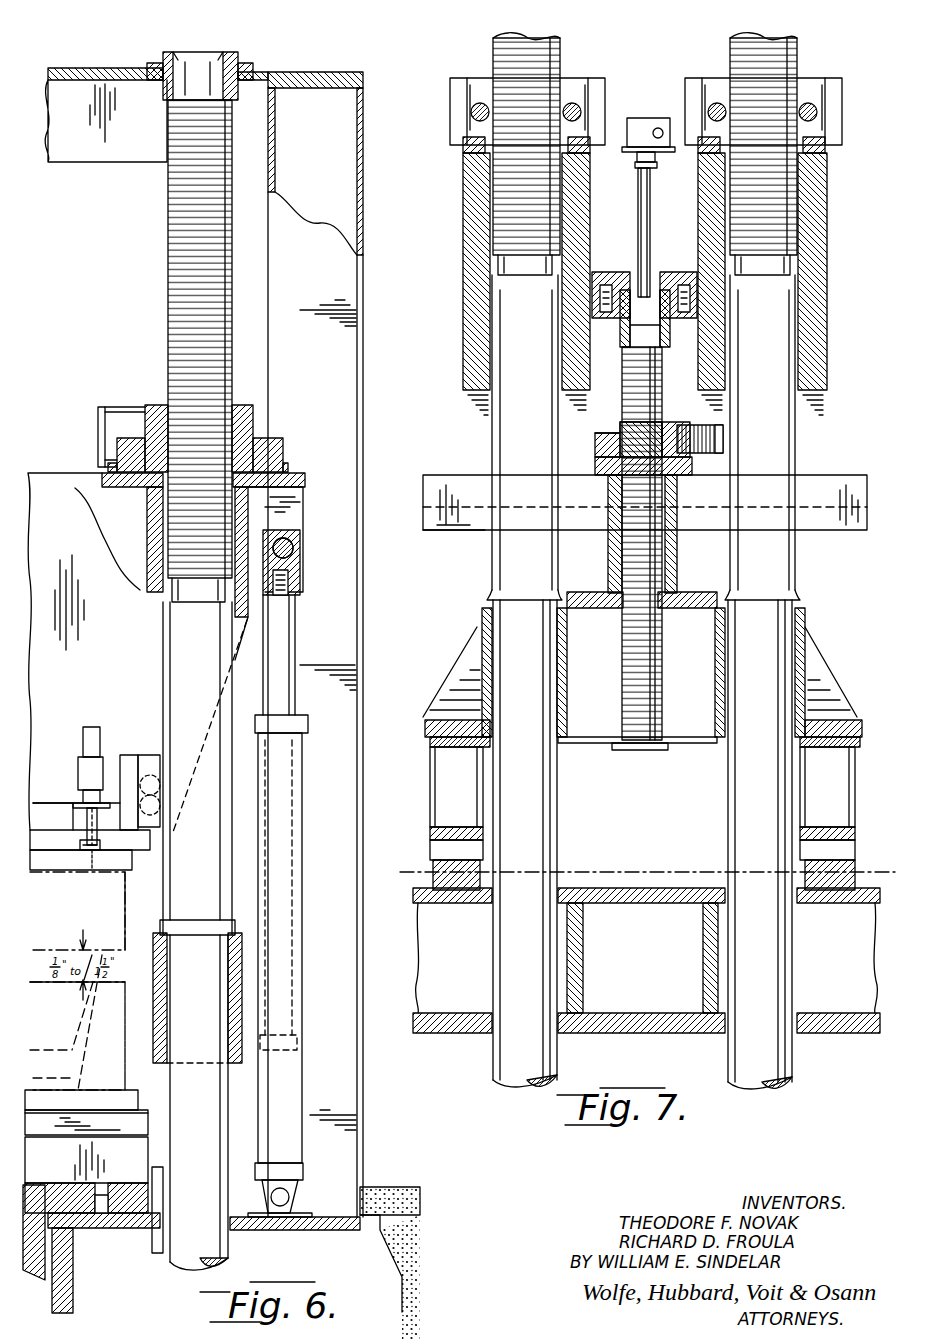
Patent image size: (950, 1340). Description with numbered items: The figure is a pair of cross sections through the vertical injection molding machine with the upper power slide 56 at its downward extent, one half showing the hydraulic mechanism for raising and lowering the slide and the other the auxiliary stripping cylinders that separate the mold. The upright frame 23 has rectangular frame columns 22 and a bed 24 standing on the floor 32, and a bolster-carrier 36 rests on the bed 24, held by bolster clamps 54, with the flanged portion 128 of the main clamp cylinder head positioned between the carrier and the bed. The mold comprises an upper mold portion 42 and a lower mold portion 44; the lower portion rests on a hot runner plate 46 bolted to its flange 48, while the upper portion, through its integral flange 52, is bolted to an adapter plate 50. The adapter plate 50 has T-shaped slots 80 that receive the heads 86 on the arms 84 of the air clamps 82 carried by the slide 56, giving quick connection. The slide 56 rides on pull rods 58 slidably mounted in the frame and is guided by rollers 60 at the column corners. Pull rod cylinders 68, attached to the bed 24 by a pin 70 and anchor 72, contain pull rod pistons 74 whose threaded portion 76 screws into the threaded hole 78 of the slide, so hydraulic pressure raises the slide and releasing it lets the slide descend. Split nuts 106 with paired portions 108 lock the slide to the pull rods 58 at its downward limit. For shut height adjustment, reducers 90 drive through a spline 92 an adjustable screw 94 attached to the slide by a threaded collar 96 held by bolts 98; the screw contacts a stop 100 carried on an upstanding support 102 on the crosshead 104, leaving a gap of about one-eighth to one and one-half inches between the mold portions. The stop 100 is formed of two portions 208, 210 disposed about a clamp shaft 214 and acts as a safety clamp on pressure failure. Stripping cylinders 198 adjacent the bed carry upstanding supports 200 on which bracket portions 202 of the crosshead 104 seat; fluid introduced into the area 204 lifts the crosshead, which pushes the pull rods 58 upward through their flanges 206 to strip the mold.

In FIG. 6, the frame columns 22 is at (363, 302).
In FIG. 6, the upright frame 23 is at (80, 68).
In FIG. 6, the bed 24 is at (345, 1215).
In FIG. 7, the bed 24 is at (608, 895).
In FIG. 6, the floor 32 is at (393, 1192).
In FIG. 7, the floor 32 is at (680, 882).
In FIG. 6, the bolster-carrier 36 is at (63, 1174).
In FIG. 6, the upper mold portion 42 is at (68, 914).
In FIG. 6, the lower mold portion 44 is at (112, 1064).
In FIG. 6, the hot runner plate 46 is at (135, 1122).
In FIG. 6, the flange 48 is at (130, 1100).
In FIG. 6, the adapter plate 50 is at (150, 840).
In FIG. 7, the adapter plate 50 is at (445, 530).
In FIG. 6, the integral flange 52 is at (132, 862).
In FIG. 6, the bolster clamps 54 is at (152, 1175).
In FIG. 6, the upper power slide 56 is at (112, 653).
In FIG. 7, the upper power slide 56 is at (445, 480).
In FIG. 6, the pull rods 58 is at (168, 312).
In FIG. 7, the pull rods 58 is at (548, 40).
In FIG. 6, the rollers 60 is at (158, 808).
In FIG. 6, the pull rod cylinders 68 is at (290, 768).
In FIG. 6, the pin 70 is at (280, 1206).
In FIG. 6, the anchor 72 is at (300, 1220).
In FIG. 6, the pull rod pistons 74 is at (285, 1050).
In FIG. 6, the threaded portion 76 is at (296, 562).
In FIG. 6, the threaded hole 78 is at (281, 595).
In FIG. 6, the T-shaped slots 80 is at (85, 850).
In FIG. 6, the air clamps 82 is at (83, 745).
In FIG. 6, the arm 84 is at (87, 826).
In FIG. 6, the head 86 is at (95, 860).
In FIG. 7, the reducers 90 is at (650, 118).
In FIG. 7, the spline 92 is at (650, 188).
In FIG. 7, the adjustable screw 94 is at (622, 385).
In FIG. 7, the threaded collar 96 is at (612, 272).
In FIG. 7, the bolts 98 is at (603, 300).
In FIG. 7, the stop 100 is at (610, 427).
In FIG. 7, the upstanding support 102 is at (672, 540).
In FIG. 6, the crosshead 104 is at (240, 1012).
In FIG. 7, the crosshead 104 is at (482, 622).
In FIG. 6, the split nuts 106 is at (257, 401).
In FIG. 7, the split nuts 106 is at (470, 69).
In FIG. 6, the split nut portions 108 is at (155, 405).
In FIG. 6, the flanged portion 128 is at (80, 1215).
In FIG. 7, the stripping cylinders 198 is at (483, 870).
In FIG. 7, the upstanding support 200 is at (432, 805).
In FIG. 7, the bracket portions 202 is at (455, 685).
In FIG. 7, the area 204 is at (432, 858).
In FIG. 7, the flanges 206 is at (510, 605).
In FIG. 7, the stop portion 208 is at (598, 460).
In FIG. 7, the stop portion 210 is at (700, 446).
In FIG. 7, the clamp shaft 214 is at (655, 640).